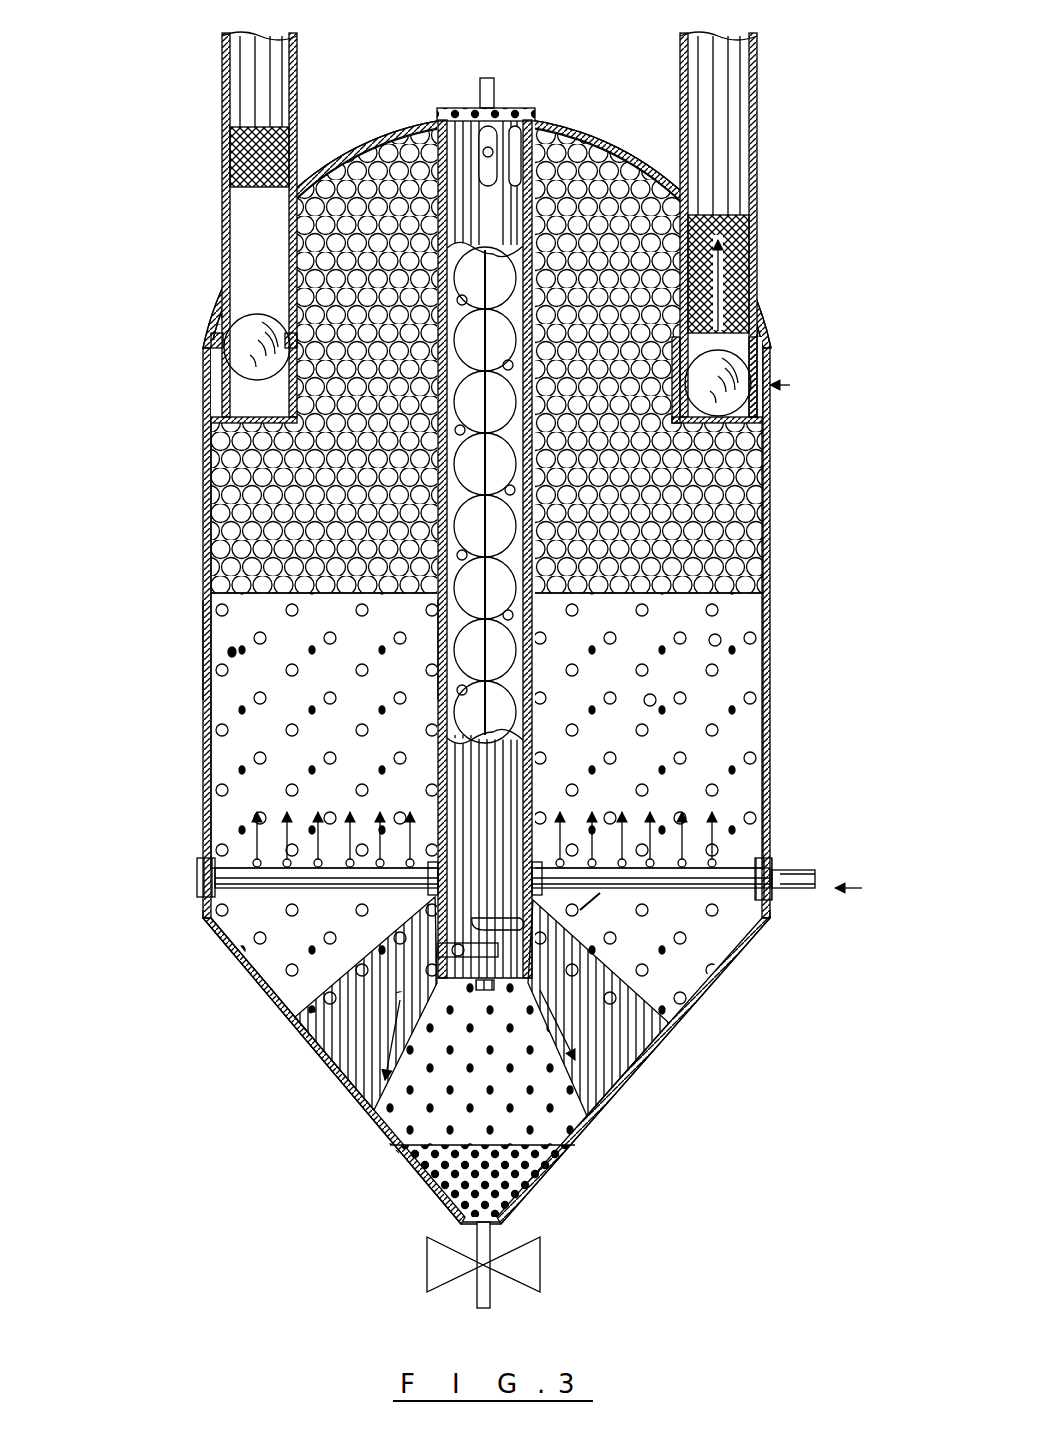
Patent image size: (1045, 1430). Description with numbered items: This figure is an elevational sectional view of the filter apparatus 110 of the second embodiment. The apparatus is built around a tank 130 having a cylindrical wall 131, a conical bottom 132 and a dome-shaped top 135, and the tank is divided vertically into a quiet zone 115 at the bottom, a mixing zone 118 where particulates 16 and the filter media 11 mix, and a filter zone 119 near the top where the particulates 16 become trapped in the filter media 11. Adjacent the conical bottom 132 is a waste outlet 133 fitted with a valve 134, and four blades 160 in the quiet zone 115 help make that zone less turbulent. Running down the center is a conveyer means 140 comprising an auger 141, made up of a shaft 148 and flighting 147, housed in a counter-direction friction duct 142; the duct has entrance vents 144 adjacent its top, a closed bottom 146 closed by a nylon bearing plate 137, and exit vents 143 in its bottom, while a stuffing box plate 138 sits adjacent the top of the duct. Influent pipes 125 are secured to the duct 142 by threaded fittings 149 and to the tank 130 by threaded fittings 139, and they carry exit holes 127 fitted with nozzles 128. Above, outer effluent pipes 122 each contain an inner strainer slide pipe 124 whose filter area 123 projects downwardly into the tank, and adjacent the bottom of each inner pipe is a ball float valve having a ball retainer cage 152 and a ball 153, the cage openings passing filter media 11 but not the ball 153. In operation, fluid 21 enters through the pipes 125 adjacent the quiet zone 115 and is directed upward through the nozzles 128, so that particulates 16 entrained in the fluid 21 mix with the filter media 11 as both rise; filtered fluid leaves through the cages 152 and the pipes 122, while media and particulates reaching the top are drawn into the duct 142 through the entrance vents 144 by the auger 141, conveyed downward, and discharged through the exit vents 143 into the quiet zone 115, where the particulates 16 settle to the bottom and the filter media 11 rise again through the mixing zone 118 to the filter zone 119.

The filter apparatus 110 is at (375, 48).
The filter media 11 is at (248, 607).
The particulates 16 is at (228, 652).
The fluid 21 is at (250, 915).
The quiet zone 115 is at (310, 975).
The mixing zone 118 is at (715, 640).
The filter zone 119 is at (768, 500).
The outer effluent pipe 122 is at (230, 120).
The filter area 123 is at (758, 362).
The inner strainer slide pipe 124 is at (215, 215).
The influent pipe 125 is at (212, 915).
The exit hole 127 is at (250, 870).
The nozzle 128 is at (255, 860).
The tank 130 is at (168, 1010).
The cylindrical wall 131 is at (205, 690).
The conical bottom 132 is at (300, 1068).
The waste outlet 133 is at (490, 1240).
The valve 134 is at (540, 1262).
The dome-shaped top 135 is at (590, 142).
The nylon bearing plate 137 is at (485, 990).
The stuffing box plate 138 is at (493, 100).
The threaded fitting 139 is at (205, 868).
The conveyer means 140 is at (540, 670).
The auger 141 is at (545, 645).
The counter-direction friction duct 142 is at (442, 660).
The exit vent 143 is at (540, 922).
The entrance vent 144 is at (410, 120).
The closed bottom 146 is at (530, 975).
The flighting 147 is at (535, 618).
The shaft 148 is at (478, 92).
The threaded fitting 149 is at (428, 830).
The ball retainer cage 152 is at (768, 440).
The ball 153 is at (770, 412).
The blades 160 is at (360, 1078).